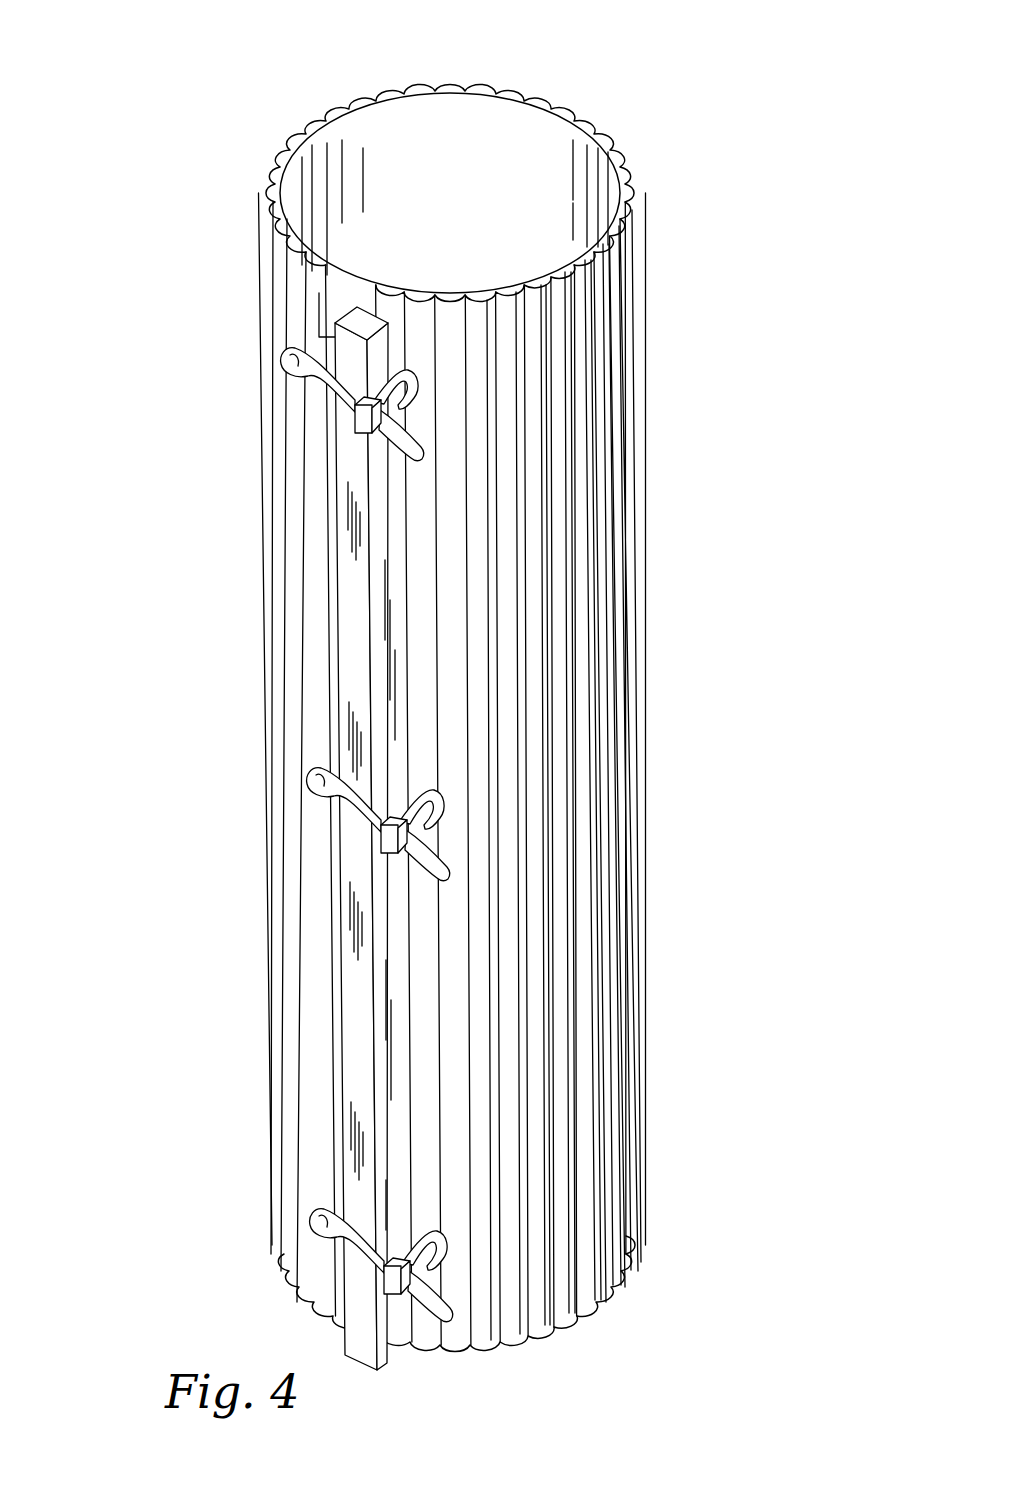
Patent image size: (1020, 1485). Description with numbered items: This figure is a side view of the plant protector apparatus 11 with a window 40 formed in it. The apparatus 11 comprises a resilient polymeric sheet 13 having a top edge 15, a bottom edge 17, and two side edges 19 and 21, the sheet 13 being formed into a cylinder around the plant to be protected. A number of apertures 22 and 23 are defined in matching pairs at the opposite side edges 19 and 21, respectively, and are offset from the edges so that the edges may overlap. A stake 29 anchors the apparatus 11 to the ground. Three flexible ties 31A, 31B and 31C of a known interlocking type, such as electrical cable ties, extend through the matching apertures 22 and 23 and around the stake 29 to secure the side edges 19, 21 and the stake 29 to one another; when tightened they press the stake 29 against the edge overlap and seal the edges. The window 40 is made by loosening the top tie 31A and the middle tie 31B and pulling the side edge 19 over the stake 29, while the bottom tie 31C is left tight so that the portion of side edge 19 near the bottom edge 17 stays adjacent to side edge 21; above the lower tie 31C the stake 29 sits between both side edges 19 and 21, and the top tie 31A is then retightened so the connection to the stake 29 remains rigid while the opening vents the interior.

The plant protector apparatus 11 is at (721, 263).
The resilient polymeric sheet 13 is at (652, 773).
The top edge 15 is at (573, 94).
The bottom edge 17 is at (612, 1310).
The side edge 19 is at (262, 327).
The side edge 21 is at (352, 300).
The aperture 22 is at (285, 364).
The aperture 23 is at (413, 391).
The stake 29 is at (348, 605).
The top tie 31A is at (323, 403).
The middle tie 31B is at (345, 820).
The bottom tie 31C is at (357, 1265).
The window 40 is at (335, 1015).